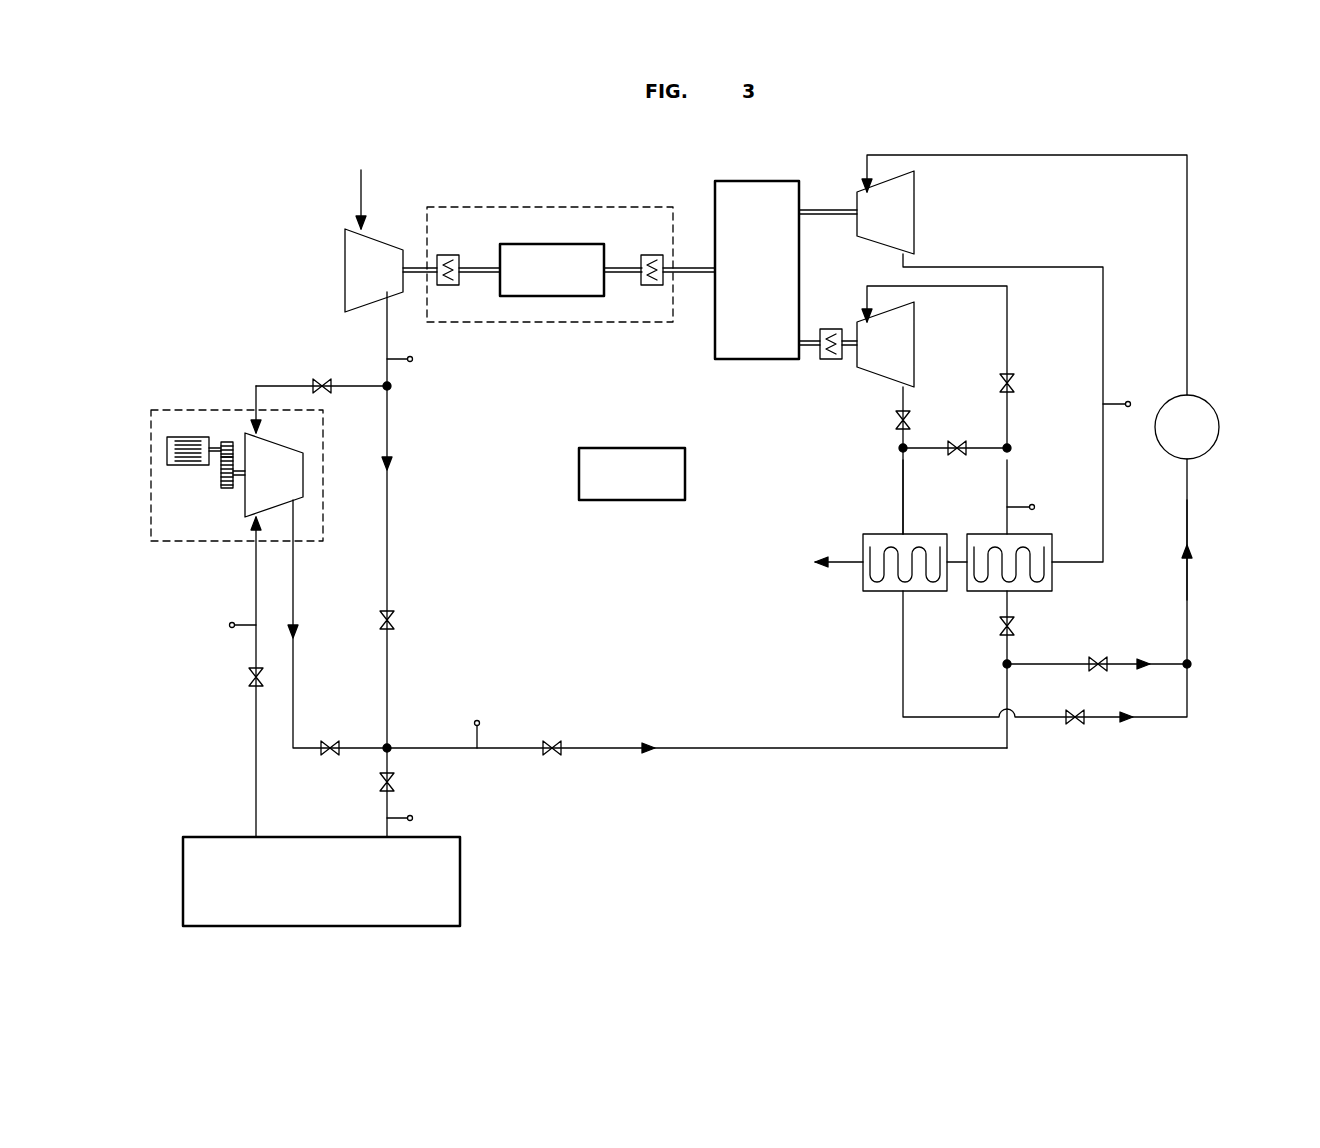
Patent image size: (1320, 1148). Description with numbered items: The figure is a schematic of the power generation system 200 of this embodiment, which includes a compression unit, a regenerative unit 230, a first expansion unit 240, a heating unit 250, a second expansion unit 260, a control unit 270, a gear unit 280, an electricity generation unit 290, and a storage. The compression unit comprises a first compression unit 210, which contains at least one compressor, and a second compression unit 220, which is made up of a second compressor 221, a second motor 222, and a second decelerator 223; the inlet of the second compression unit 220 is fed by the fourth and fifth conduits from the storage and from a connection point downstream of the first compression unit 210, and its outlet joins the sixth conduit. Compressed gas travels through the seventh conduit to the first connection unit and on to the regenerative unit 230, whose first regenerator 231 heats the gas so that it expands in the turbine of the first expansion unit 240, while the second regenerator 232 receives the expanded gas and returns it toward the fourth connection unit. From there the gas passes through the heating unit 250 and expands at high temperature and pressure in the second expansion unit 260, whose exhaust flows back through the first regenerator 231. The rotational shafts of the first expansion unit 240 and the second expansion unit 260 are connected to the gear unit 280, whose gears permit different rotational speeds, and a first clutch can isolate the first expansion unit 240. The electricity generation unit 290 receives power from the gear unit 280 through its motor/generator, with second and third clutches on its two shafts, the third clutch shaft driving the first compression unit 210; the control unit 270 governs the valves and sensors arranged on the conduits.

The power generation system 200 is at (1234, 128).
The first compression unit 210 is at (378, 232).
The second compression unit 220 is at (256, 440).
The second compressor 221 is at (300, 481).
The second motor 222 is at (175, 437).
The second decelerator 223 is at (223, 462).
The regenerative unit 230 is at (898, 589).
The first regenerator 231 is at (967, 592).
The second regenerator 232 is at (863, 586).
The first expansion unit 240 is at (914, 337).
The heating unit 250 is at (1215, 426).
The second expansion unit 260 is at (914, 206).
The control unit 270 is at (632, 462).
The gear unit 280 is at (758, 181).
The electricity generation unit 290 is at (550, 238).